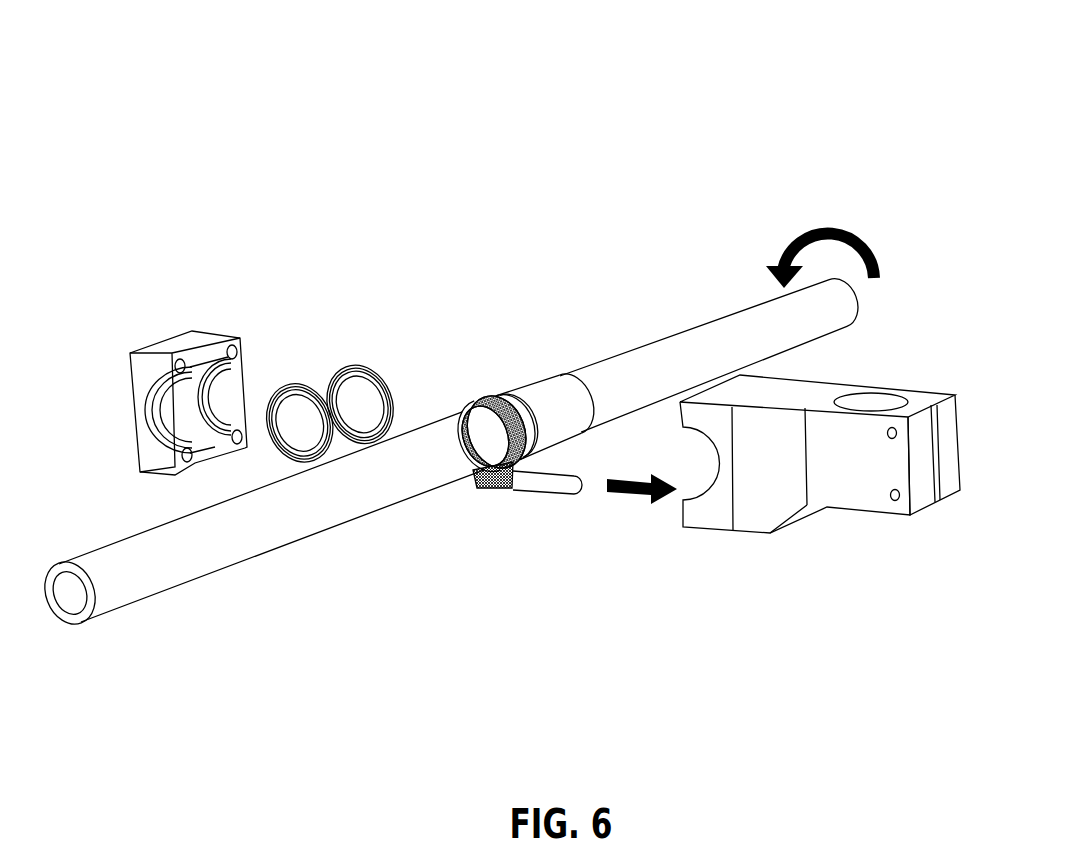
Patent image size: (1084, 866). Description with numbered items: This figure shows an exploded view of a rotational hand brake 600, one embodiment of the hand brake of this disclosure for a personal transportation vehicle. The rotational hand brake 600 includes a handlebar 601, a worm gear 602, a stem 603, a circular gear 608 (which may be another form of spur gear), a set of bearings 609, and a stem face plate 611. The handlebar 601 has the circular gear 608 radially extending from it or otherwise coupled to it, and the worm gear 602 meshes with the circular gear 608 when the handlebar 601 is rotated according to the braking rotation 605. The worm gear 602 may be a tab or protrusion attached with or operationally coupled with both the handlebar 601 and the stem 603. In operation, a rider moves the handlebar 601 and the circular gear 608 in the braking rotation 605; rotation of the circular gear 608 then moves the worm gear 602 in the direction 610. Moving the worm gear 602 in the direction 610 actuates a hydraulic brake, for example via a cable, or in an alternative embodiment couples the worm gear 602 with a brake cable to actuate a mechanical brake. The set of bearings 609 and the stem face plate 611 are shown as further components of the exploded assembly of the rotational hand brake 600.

The rotational hand brake 600 is at (847, 108).
The handlebar 601 is at (282, 545).
The worm gear 602 is at (547, 488).
The stem 603 is at (900, 517).
The braking rotation 605 is at (820, 239).
The circular gear 608 is at (505, 388).
The set of bearings 609 is at (343, 368).
The direction 610 is at (648, 495).
The stem face plate 611 is at (158, 342).